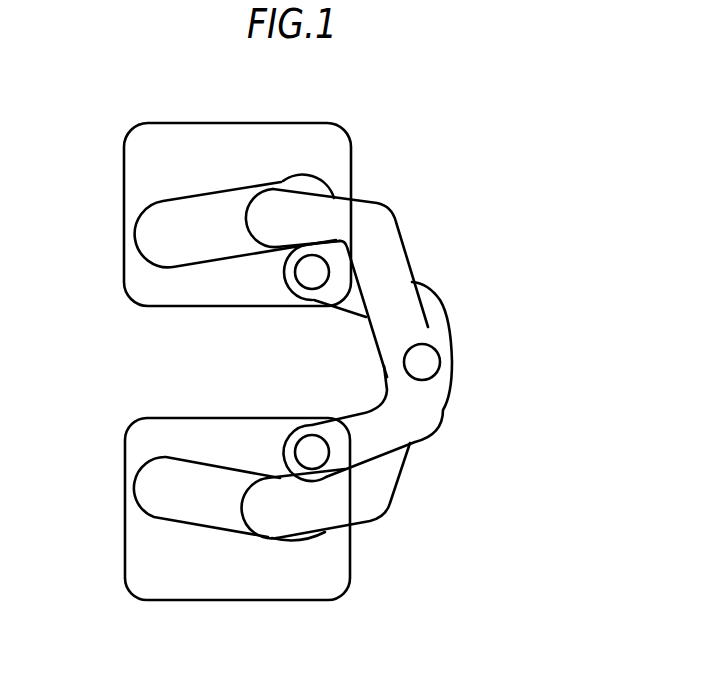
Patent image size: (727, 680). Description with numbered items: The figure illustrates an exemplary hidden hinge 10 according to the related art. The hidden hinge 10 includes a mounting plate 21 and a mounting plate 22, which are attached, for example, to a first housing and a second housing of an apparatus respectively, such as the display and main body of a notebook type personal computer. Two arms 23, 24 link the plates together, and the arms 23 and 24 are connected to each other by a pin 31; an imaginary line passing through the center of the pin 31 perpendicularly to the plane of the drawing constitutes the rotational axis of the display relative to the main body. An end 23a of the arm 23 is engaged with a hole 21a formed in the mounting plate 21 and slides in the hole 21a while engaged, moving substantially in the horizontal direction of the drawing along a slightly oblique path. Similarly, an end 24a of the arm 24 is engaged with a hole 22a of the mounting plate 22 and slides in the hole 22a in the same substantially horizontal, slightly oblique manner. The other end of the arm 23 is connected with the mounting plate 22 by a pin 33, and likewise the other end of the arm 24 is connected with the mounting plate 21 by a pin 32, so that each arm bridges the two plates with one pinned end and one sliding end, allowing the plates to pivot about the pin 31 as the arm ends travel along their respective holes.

The hidden hinge 10 is at (424, 129).
The mounting plate 21 is at (124, 184).
The hole 21a is at (180, 200).
The mounting plate 22 is at (125, 555).
The hole 22a is at (180, 522).
The arm 23 is at (393, 218).
The end of arm 23a is at (265, 203).
The arm 24 is at (390, 508).
The end of arm 24a is at (265, 524).
The pin 31 is at (441, 362).
The pin 32 is at (300, 274).
The pin 33 is at (305, 448).